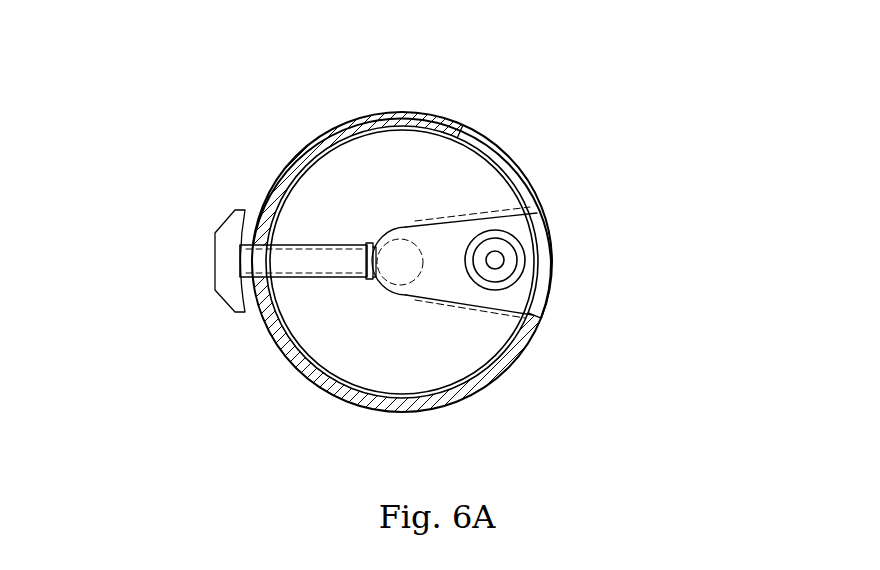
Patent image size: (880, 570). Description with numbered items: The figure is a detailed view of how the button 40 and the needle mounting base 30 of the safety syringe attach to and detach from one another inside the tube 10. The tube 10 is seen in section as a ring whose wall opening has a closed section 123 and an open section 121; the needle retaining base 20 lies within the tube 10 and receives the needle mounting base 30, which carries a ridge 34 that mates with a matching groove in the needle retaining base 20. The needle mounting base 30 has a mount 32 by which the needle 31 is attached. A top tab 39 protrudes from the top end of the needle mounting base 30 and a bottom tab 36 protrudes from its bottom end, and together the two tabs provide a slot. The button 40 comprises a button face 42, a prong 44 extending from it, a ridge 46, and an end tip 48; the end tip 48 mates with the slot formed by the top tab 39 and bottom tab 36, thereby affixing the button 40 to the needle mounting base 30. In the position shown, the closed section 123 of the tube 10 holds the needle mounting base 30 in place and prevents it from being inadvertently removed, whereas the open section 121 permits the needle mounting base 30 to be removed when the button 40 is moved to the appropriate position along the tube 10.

The tube 10 is at (400, 408).
The needle retaining base 20 is at (445, 358).
The needle mounting base 30 is at (493, 221).
The needle 31 is at (508, 288).
The mount 32 is at (495, 258).
The ridge 34 is at (458, 215).
The bottom tab 36 is at (398, 255).
The top tab 39 is at (372, 248).
The button 40 is at (222, 293).
The button face 42 is at (225, 253).
The prong 44 is at (303, 258).
The ridge 46 is at (327, 278).
The end tip 48 is at (367, 255).
The open section 121 is at (508, 165).
The closed section 123 is at (542, 283).